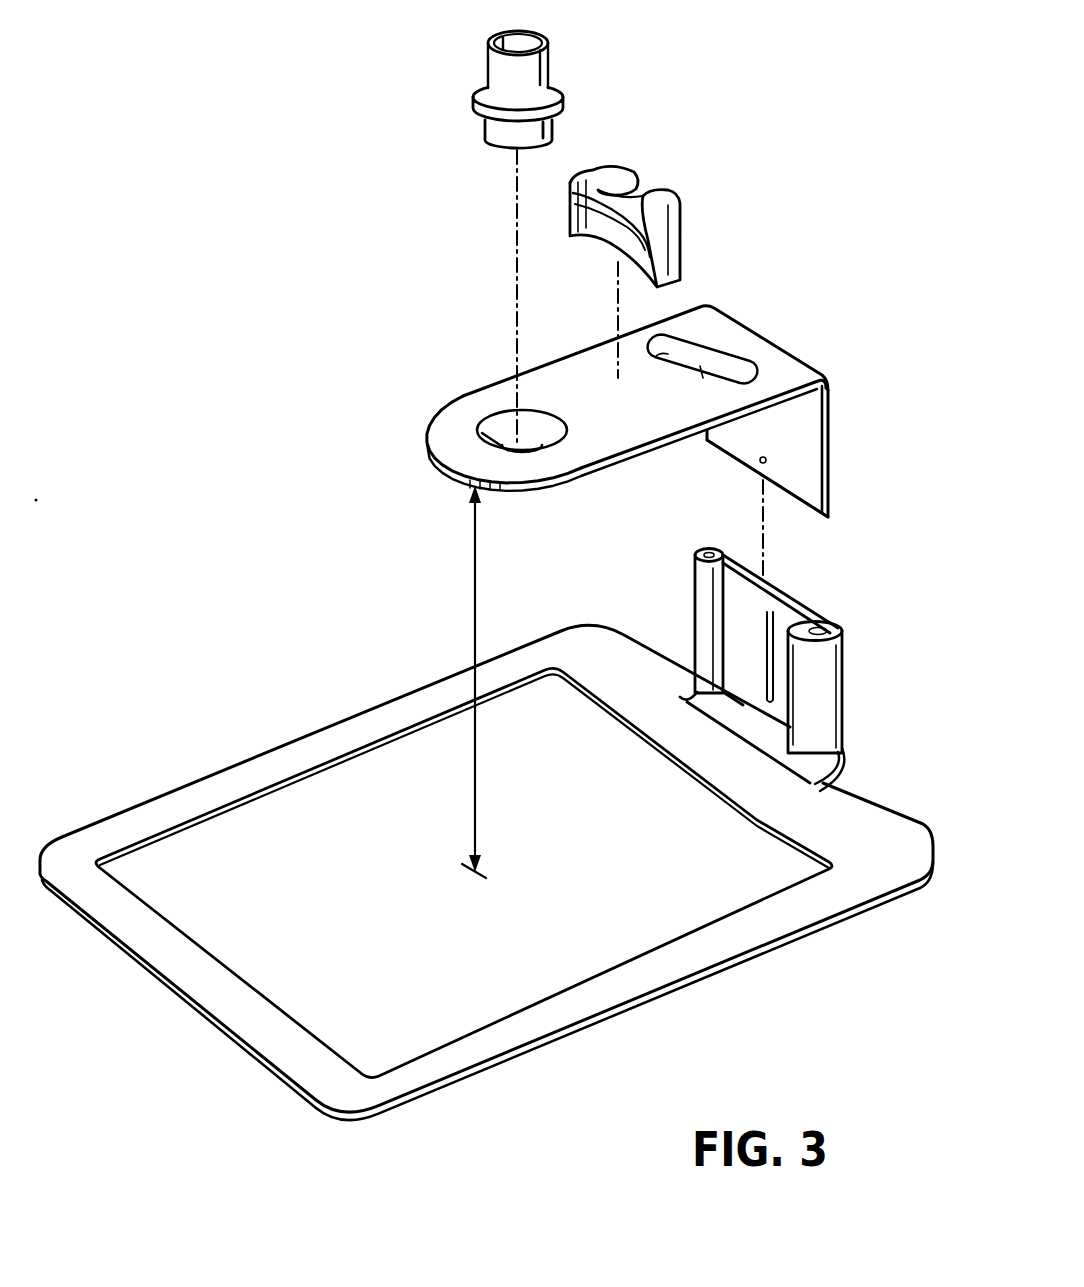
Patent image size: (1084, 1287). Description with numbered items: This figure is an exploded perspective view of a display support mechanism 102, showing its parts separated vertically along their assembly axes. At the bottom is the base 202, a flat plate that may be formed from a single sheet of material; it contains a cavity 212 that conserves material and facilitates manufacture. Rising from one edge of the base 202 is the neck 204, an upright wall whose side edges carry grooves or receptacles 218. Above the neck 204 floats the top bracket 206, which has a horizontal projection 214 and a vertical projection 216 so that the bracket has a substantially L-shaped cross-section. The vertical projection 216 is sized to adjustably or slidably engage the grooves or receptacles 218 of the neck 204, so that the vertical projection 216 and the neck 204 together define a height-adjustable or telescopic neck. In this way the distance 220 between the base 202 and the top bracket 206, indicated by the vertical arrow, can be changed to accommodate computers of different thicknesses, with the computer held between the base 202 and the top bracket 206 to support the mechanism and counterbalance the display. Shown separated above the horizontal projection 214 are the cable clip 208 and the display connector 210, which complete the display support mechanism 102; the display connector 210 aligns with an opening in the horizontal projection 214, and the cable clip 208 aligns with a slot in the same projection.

The display support mechanism 102 is at (243, 50).
The base 202 is at (797, 937).
The neck 204 is at (772, 650).
The top bracket 206 is at (643, 398).
The cable clip 208 is at (657, 185).
The display connector 210 is at (550, 63).
The cavity 212 is at (381, 776).
The horizontal projection 214 is at (462, 417).
The vertical projection 216 is at (838, 470).
The grooves or receptacles 218 is at (710, 558).
The distance 220 is at (478, 804).